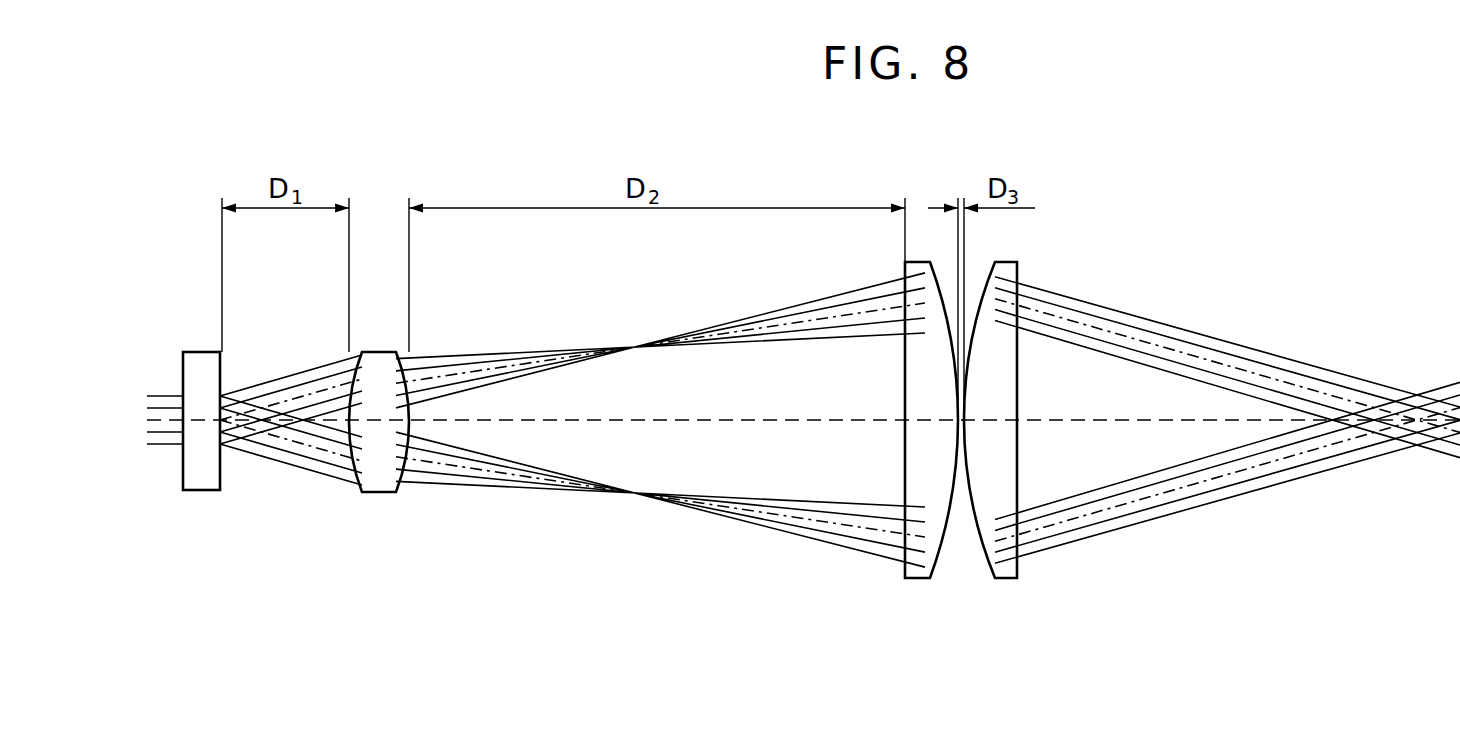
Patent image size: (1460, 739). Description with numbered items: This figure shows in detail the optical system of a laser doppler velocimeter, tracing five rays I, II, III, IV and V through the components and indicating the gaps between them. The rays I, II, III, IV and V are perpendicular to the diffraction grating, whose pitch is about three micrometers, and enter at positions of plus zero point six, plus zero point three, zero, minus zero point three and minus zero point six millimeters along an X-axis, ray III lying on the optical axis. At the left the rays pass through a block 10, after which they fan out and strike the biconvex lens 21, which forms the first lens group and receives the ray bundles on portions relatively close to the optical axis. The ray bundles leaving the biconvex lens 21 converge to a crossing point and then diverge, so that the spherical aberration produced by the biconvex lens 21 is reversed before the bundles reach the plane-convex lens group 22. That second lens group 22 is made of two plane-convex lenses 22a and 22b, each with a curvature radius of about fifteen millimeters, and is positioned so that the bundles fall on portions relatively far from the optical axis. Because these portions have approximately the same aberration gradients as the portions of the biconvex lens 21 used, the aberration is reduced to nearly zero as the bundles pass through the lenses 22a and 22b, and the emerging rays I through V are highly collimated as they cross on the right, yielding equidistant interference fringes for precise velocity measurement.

The light source block 10 is at (205, 491).
The biconvex lens 21 is at (380, 493).
The plane-convex lens group 22 is at (965, 490).
The plane-convex lens 22a is at (920, 579).
The plane-convex lens 22b is at (1009, 579).
The ray I is at (165, 396).
The ray II is at (150, 408).
The ray III is at (150, 420).
The ray IV is at (152, 432).
The ray V is at (165, 444).